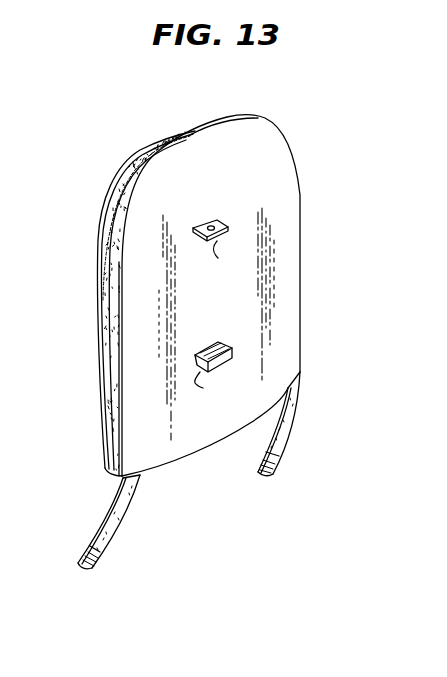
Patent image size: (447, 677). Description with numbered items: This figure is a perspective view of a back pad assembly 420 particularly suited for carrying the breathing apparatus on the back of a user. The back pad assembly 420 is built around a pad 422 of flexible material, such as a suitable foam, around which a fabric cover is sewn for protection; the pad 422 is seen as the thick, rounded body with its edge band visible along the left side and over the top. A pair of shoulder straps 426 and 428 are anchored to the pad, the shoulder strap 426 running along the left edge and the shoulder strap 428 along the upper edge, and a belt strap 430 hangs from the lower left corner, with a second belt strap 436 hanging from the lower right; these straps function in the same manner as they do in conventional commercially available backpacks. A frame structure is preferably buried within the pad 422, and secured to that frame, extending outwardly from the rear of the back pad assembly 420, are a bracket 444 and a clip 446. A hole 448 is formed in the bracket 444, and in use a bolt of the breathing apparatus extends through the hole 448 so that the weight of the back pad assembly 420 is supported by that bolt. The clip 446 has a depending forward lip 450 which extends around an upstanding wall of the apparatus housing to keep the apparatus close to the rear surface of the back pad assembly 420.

The back pad assembly 420 is at (344, 186).
The pad 422 is at (110, 350).
The shoulder strap 426 is at (149, 141).
The shoulder strap 428 is at (244, 116).
The belt strap 430 is at (126, 502).
The right strap 436 is at (292, 413).
The bracket 444 is at (215, 220).
The clip 446 is at (218, 340).
The hole 448 is at (225, 265).
The depending forward lip 450 is at (221, 389).